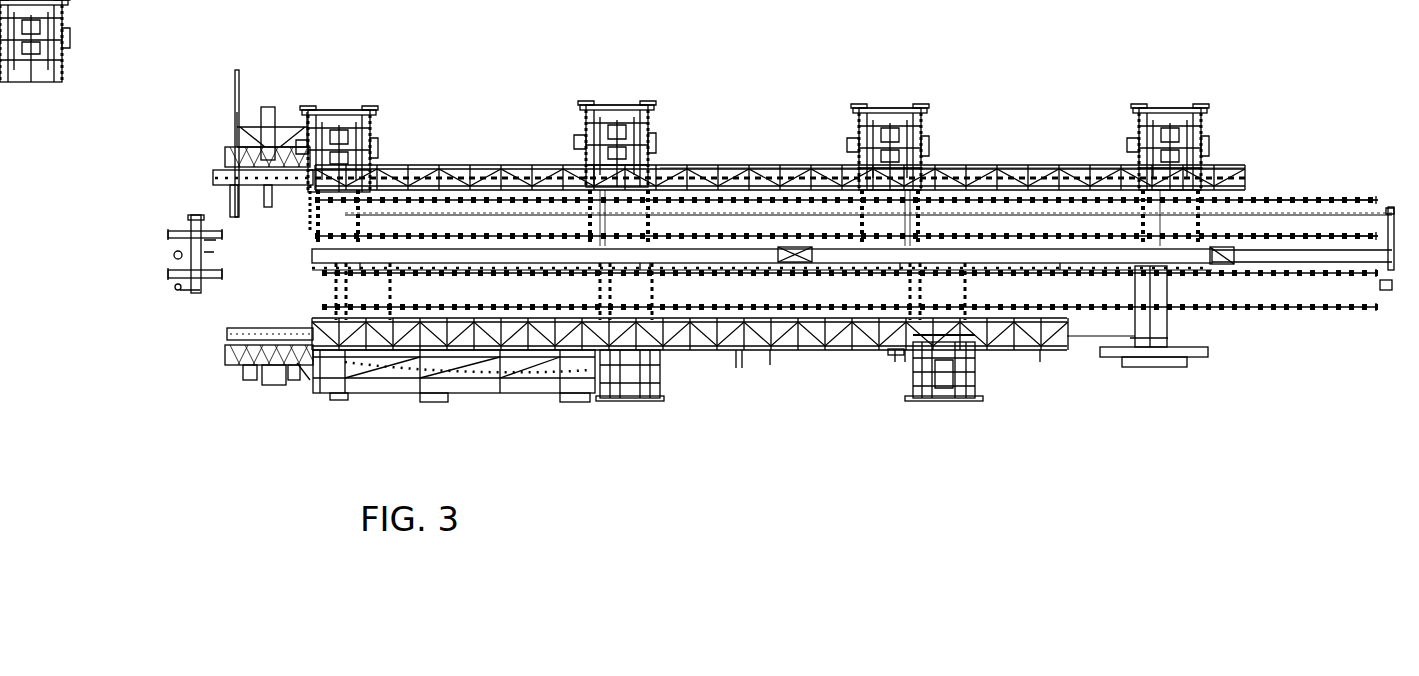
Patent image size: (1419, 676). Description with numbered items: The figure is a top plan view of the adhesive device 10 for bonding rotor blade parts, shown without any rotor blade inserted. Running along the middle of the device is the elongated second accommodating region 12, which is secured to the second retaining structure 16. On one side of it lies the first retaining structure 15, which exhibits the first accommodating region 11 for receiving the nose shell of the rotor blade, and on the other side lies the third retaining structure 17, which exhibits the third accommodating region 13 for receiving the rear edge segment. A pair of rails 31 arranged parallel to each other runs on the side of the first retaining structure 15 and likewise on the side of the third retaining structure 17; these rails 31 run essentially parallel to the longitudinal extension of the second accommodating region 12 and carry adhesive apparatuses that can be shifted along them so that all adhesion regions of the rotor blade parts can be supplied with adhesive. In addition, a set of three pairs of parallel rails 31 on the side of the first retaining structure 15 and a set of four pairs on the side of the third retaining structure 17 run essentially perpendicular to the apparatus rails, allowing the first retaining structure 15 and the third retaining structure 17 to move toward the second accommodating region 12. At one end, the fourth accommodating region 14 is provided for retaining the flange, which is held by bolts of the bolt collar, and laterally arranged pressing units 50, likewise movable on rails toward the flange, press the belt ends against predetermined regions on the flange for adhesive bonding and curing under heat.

The adhesive device 10 is at (805, 74).
The first accommodating region 11 is at (482, 333).
The second accommodating region 12 is at (1016, 256).
The third accommodating region 13 is at (447, 163).
The fourth accommodating region 14 is at (206, 248).
The first retaining structure 15 is at (712, 352).
The second retaining structure 16 is at (1216, 255).
The third retaining structure 17 is at (660, 168).
The rails 31 is at (922, 172).
The pressing unit 50 is at (266, 158).